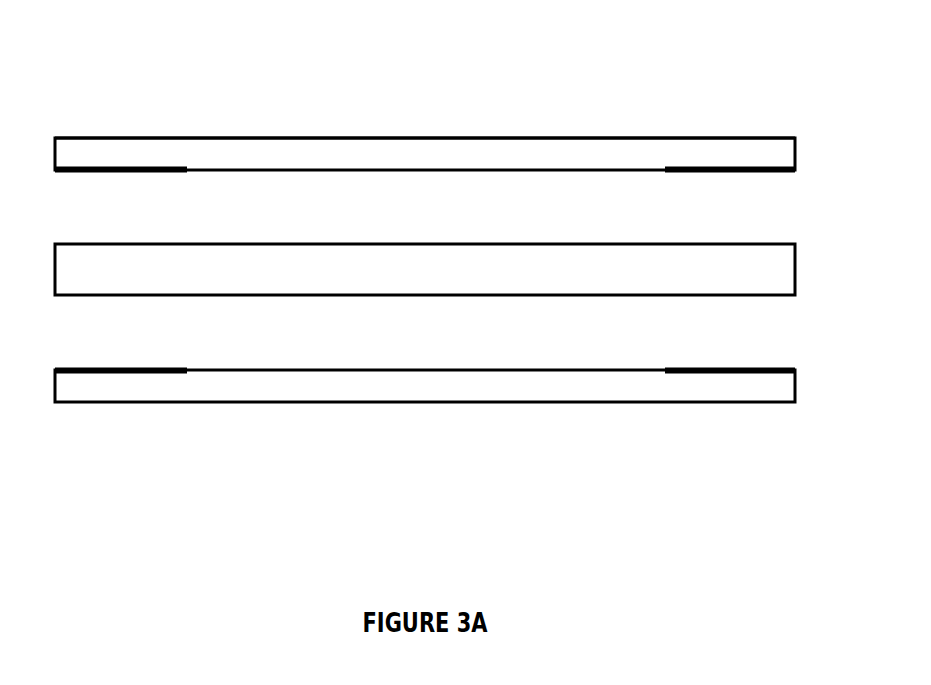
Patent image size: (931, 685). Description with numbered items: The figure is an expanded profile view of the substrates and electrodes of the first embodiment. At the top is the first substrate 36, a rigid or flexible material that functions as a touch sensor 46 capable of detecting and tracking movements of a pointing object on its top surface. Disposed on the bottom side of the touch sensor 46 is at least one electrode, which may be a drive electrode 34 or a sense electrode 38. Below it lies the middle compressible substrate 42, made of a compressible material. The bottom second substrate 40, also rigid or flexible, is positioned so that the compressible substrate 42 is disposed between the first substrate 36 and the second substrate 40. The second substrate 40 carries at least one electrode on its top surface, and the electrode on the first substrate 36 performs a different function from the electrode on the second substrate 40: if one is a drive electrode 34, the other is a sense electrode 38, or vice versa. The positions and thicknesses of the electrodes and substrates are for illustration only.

The drive electrode 34 is at (115, 168).
The first substrate 36 is at (232, 150).
The touch sensor 46 is at (428, 138).
The compressible substrate 42 is at (395, 272).
The second substrate 40 is at (253, 393).
The sense electrode 38 is at (122, 372).